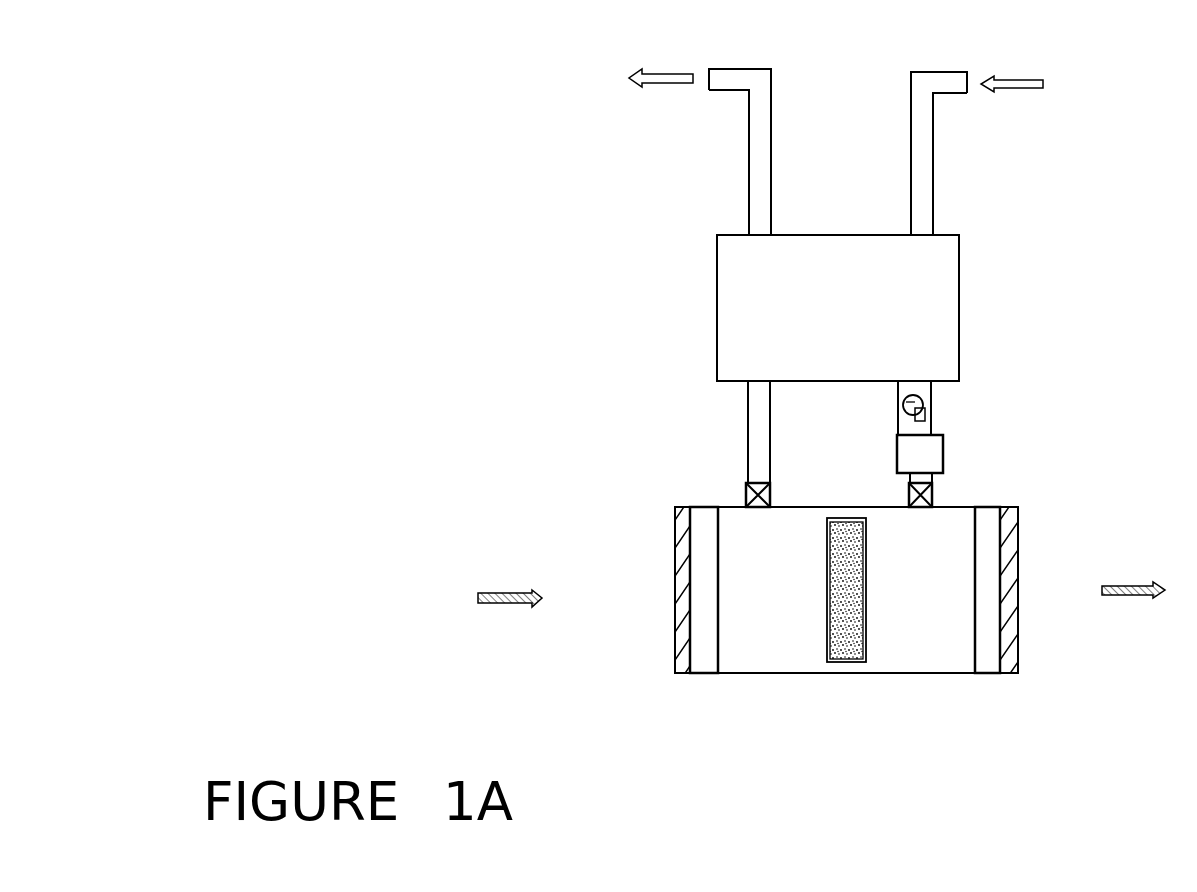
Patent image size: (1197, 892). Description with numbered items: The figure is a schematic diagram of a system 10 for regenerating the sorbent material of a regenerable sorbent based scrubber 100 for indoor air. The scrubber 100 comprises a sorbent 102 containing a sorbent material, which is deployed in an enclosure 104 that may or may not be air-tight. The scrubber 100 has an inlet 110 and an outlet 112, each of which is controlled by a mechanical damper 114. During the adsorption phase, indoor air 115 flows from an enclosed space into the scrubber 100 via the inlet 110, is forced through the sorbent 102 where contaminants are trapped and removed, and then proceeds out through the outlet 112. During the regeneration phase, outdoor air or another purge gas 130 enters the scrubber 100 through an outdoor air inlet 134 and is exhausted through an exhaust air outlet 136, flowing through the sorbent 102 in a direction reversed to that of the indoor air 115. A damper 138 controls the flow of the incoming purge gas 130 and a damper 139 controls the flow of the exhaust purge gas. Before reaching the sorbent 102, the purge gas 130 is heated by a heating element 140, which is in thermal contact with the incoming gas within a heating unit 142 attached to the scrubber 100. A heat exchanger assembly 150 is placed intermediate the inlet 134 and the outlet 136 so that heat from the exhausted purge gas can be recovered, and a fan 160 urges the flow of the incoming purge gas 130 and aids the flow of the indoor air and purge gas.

The system 10 is at (443, 86).
The regenerable sorbent based scrubber 100 is at (855, 603).
The sorbent 102 is at (845, 648).
The enclosure 104 is at (932, 641).
The inlet 110 is at (678, 547).
The outlet 112 is at (1010, 628).
The mechanical damper 114 is at (703, 517).
The indoor air 115 is at (510, 603).
The purge gas 130 is at (1027, 93).
The outdoor air inlet 134 is at (920, 168).
The exhaust air outlet 136 is at (757, 173).
The damper 138 is at (932, 492).
The damper 139 is at (746, 498).
The heating element 140 is at (942, 435).
The heating unit 142 is at (945, 448).
The heat exchanger assembly 150 is at (948, 348).
The fan 160 is at (905, 402).